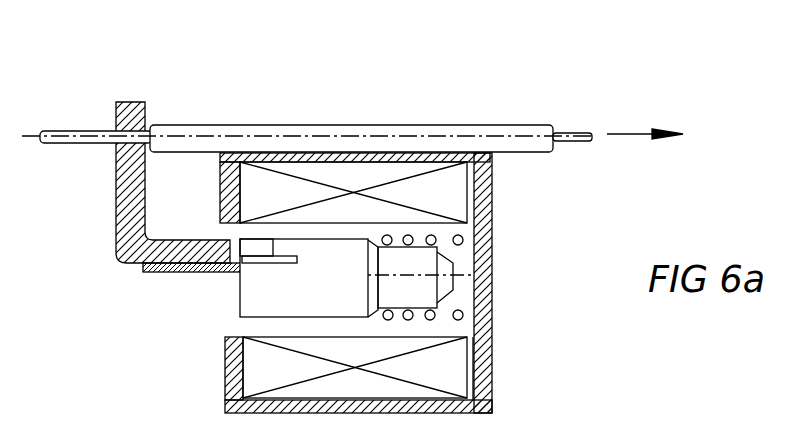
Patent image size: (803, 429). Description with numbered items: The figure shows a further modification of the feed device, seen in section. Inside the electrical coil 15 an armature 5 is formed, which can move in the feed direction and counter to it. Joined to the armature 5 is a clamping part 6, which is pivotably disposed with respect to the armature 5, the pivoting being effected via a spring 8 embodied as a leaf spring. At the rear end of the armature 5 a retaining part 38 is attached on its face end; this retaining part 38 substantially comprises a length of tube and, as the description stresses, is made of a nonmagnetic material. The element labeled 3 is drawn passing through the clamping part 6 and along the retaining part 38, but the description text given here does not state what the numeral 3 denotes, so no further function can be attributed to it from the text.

The optical fiber / wire 3 is at (72, 132).
The retaining part 38 is at (317, 127).
The clamping part 6 is at (127, 197).
The spring 8 is at (207, 272).
The armature 5 is at (287, 293).
The electrical coil 15 is at (452, 373).